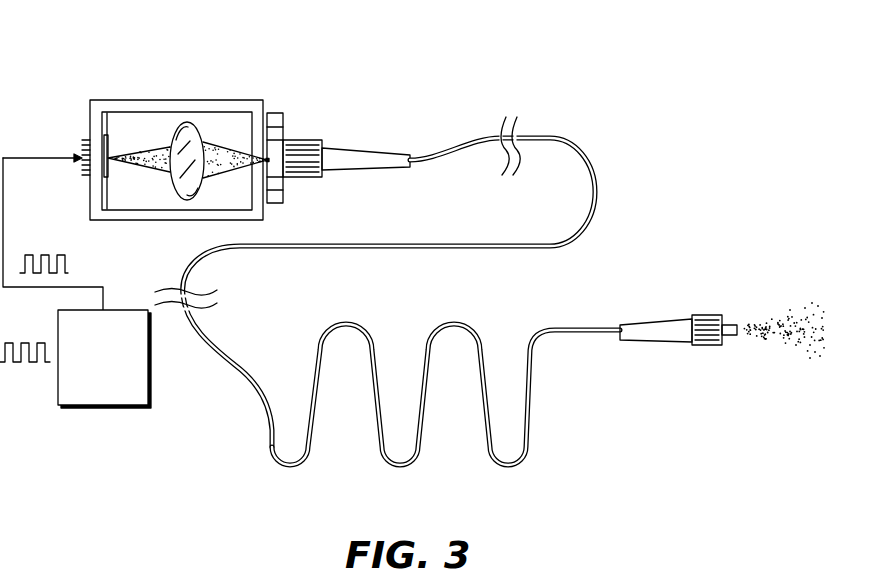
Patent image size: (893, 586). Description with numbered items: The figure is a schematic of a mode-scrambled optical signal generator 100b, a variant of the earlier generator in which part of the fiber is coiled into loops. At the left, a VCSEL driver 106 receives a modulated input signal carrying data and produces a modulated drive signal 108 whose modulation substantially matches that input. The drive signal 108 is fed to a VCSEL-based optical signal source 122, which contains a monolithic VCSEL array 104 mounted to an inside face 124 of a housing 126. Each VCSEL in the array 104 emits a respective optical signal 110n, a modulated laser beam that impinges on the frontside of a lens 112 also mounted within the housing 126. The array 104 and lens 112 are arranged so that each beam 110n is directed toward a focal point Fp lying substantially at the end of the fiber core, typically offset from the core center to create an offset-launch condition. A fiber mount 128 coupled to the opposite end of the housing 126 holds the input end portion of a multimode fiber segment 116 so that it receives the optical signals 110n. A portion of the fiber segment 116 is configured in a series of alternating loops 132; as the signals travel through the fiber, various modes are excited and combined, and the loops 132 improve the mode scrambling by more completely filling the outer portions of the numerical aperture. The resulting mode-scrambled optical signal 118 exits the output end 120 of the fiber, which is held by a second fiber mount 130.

The mode-scrambled optical signal generator 100b is at (648, 97).
The VCSEL array 104 is at (117, 177).
The VCSEL driver 106 is at (122, 398).
The modulated drive signal 108 is at (3, 227).
The optical signal 110n is at (157, 148).
The lens 112 is at (192, 197).
The multimode fiber segment 116 is at (457, 247).
The mode-scrambled optical signal 118 is at (807, 348).
The output end 120 is at (750, 323).
The VCSEL-based optical signal source 122 is at (285, 96).
The inside face 124 is at (107, 120).
The housing 126 is at (195, 105).
The fiber mount 128 is at (337, 162).
The fiber mount 130 is at (670, 340).
The alternating loops 132 is at (288, 491).
The focal point Fp is at (282, 193).